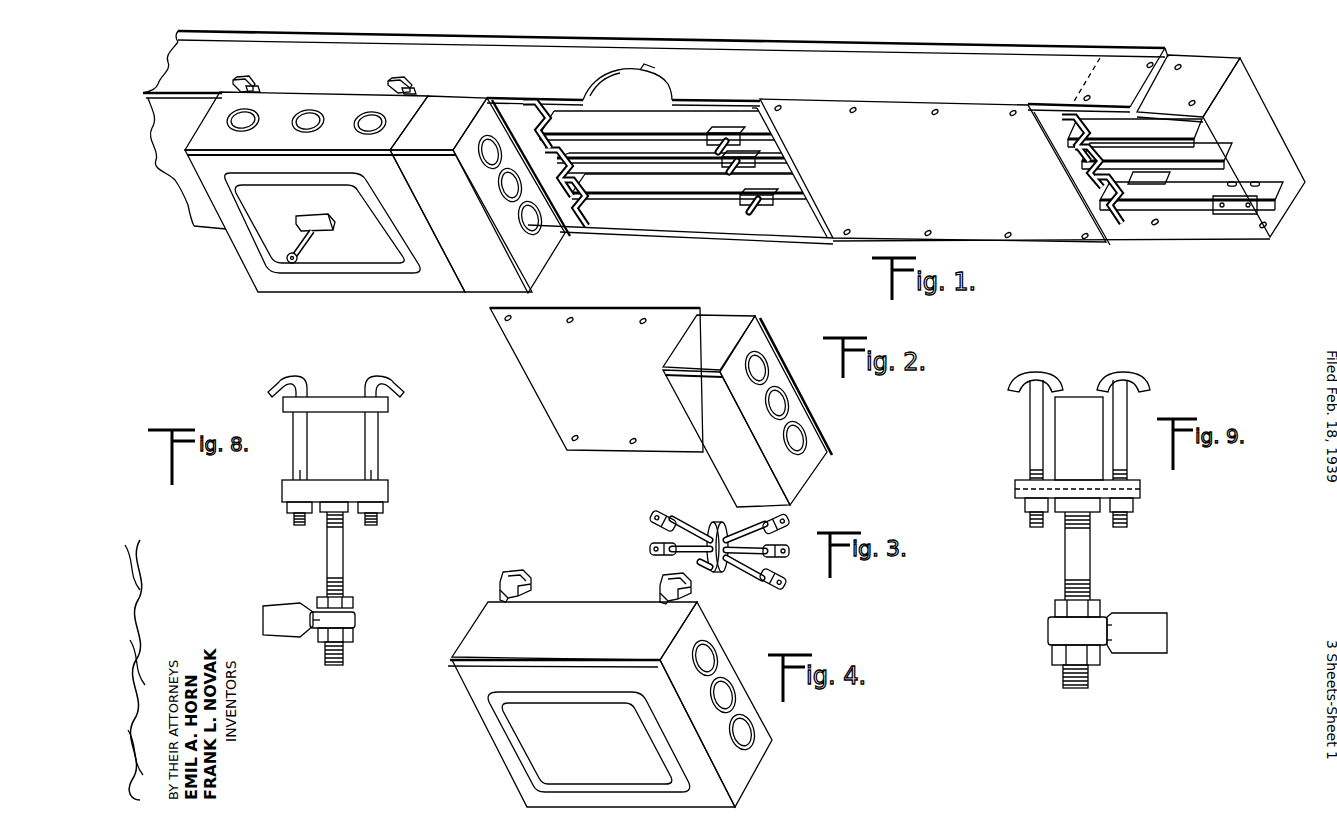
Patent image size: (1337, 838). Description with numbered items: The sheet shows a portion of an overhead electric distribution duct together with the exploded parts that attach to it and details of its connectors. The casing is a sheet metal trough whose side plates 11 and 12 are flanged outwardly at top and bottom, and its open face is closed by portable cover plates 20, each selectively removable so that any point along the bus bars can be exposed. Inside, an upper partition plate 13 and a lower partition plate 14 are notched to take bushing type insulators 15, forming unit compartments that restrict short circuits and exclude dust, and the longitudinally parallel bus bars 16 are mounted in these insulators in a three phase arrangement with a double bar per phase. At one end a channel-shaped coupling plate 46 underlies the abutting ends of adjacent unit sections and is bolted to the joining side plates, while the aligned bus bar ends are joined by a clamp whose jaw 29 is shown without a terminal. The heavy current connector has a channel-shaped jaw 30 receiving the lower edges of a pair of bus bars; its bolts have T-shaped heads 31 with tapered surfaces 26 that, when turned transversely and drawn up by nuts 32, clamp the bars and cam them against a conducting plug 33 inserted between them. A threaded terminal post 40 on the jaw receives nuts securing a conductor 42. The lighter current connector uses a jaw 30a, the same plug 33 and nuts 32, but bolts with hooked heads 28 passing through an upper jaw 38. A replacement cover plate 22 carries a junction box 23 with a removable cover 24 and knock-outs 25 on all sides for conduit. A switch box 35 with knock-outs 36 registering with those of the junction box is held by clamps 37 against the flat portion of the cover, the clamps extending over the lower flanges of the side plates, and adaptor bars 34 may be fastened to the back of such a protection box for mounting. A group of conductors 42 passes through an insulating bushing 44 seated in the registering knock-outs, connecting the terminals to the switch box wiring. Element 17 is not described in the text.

In FIG. 1, the side plate 11 is at (933, 153).
In FIG. 1, the side plate 12 is at (803, 223).
In FIG. 1, the upper partition plate 13 is at (593, 165).
In FIG. 1, the lower partition plate 14 is at (555, 232).
In FIG. 1, the bushing type insulator 15 is at (548, 122).
In FIG. 1, the bus bar 16 is at (650, 132).
In FIG. 1, the cable entry dome 17 is at (655, 91).
In FIG. 1, the portable cover plate 20 is at (1018, 227).
In FIG. 2, the replacement cover plate 22 is at (550, 402).
In FIG. 1, the junction box 23 is at (532, 257).
In FIG. 2, the junction box 23 is at (748, 343).
In FIG. 1, the removable cover 24 is at (461, 194).
In FIG. 2, the removable cover 24 is at (720, 463).
In FIG. 1, the knock-out 25 is at (528, 218).
In FIG. 2, the knock-out 25 is at (777, 403).
In FIG. 9, the tapered surface 26 is at (1027, 392).
In FIG. 8, the hooked head 28 is at (292, 373).
In FIG. 1, the bus bar joint jaw 29 is at (1235, 214).
In FIG. 9, the channel-shaped jaw 30 is at (1133, 493).
In FIG. 8, the jaw 30a is at (378, 495).
In FIG. 1, the T-shaped head 31 is at (1232, 183).
In FIG. 9, the T-shaped head 31 is at (1040, 373).
In FIG. 8, the nut 32 is at (385, 512).
In FIG. 9, the nut 32 is at (1127, 508).
In FIG. 8, the plug 33 is at (345, 440).
In FIG. 9, the plug 33 is at (1073, 440).
In FIG. 1, the adaptor bar 34 is at (253, 87).
In FIG. 4, the adaptor bar 34 is at (500, 592).
In FIG. 1, the switch box 35 is at (325, 192).
In FIG. 4, the switch box 35 is at (562, 617).
In FIG. 1, the knock-out 36 is at (240, 122).
In FIG. 4, the knock-out 36 is at (703, 653).
In FIG. 1, the clamp 37 is at (242, 77).
In FIG. 4, the clamp 37 is at (508, 568).
In FIG. 8, the upper jaw 38 is at (347, 403).
In FIG. 1, the terminal post 40 is at (752, 217).
In FIG. 8, the terminal post 40 is at (335, 552).
In FIG. 9, the terminal post 40 is at (1080, 553).
In FIG. 3, the conductor 42 is at (650, 545).
In FIG. 8, the conductor 42 is at (340, 617).
In FIG. 9, the conductor 42 is at (1133, 623).
In FIG. 3, the insulating bushing 44 is at (715, 525).
In FIG. 1, the coupling plate 46 is at (1240, 95).